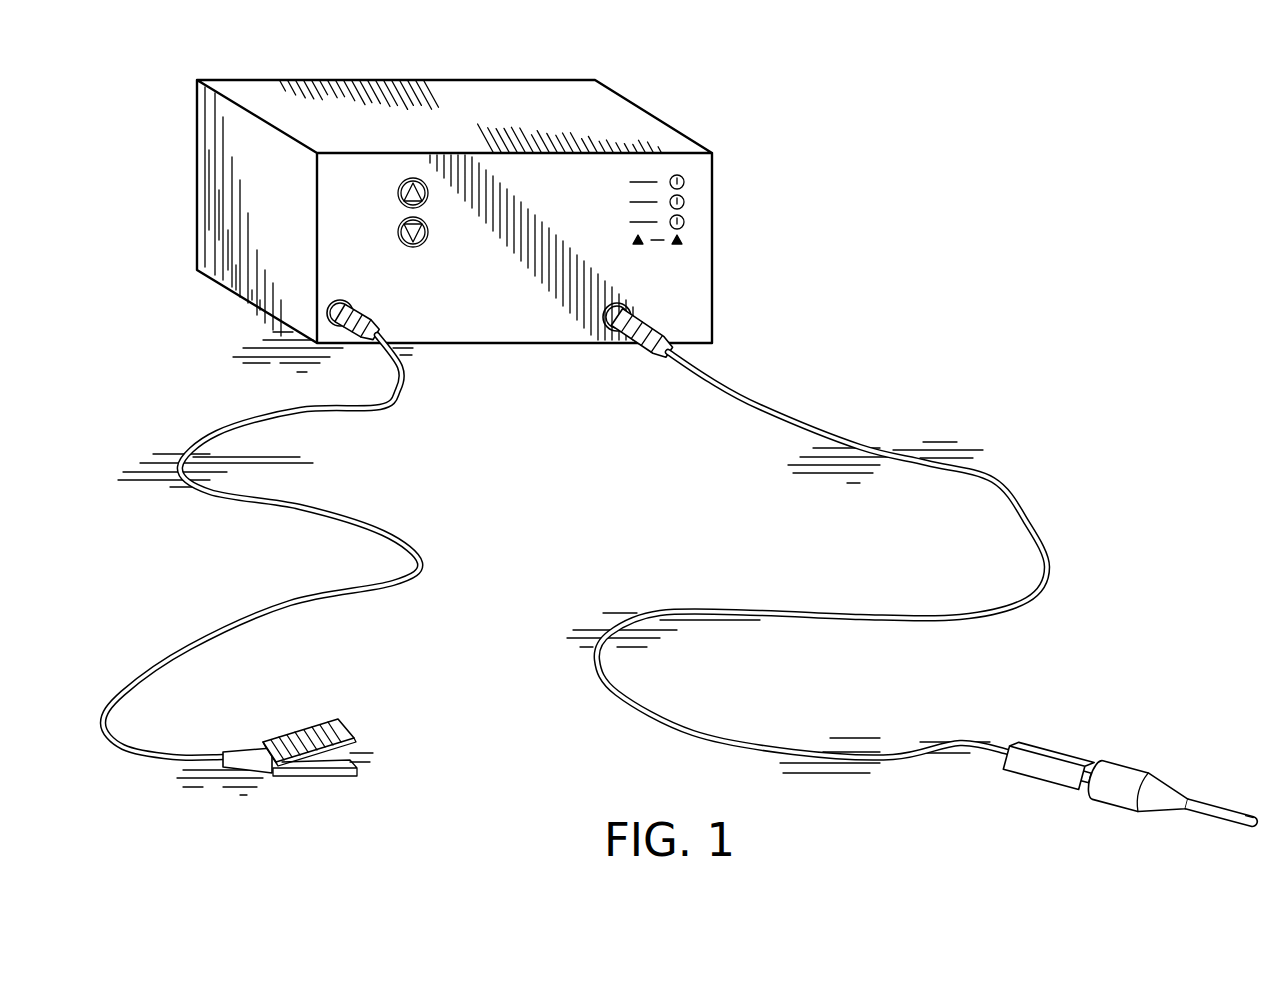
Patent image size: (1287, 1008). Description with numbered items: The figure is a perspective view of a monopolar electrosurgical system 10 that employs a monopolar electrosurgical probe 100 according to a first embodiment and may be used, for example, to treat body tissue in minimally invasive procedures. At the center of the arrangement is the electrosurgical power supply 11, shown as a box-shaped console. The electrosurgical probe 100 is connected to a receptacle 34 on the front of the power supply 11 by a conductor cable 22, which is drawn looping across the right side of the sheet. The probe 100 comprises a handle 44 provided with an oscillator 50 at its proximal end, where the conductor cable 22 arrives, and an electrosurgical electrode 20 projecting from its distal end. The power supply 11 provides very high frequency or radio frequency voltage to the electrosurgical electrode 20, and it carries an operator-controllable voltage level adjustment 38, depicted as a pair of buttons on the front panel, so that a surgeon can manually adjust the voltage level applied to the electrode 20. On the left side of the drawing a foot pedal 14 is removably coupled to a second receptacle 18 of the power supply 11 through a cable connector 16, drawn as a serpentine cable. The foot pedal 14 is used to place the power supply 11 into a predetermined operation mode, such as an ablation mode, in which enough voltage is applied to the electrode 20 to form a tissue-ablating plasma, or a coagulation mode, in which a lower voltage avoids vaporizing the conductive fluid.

The monopolar electrosurgical system 10 is at (808, 272).
The electrosurgical power supply 11 is at (473, 108).
The foot pedal 14 is at (347, 725).
The cable connector 16 is at (390, 530).
The receptacle 18 is at (363, 302).
The electrosurgical electrode 20 is at (1210, 813).
The conductor cable 22 is at (1000, 482).
The receptacle 34 is at (637, 352).
The voltage level adjustment 38 is at (398, 234).
The handle 44 is at (1123, 773).
The oscillator 50 is at (1052, 752).
The monopolar electrosurgical probe 100 is at (1221, 800).